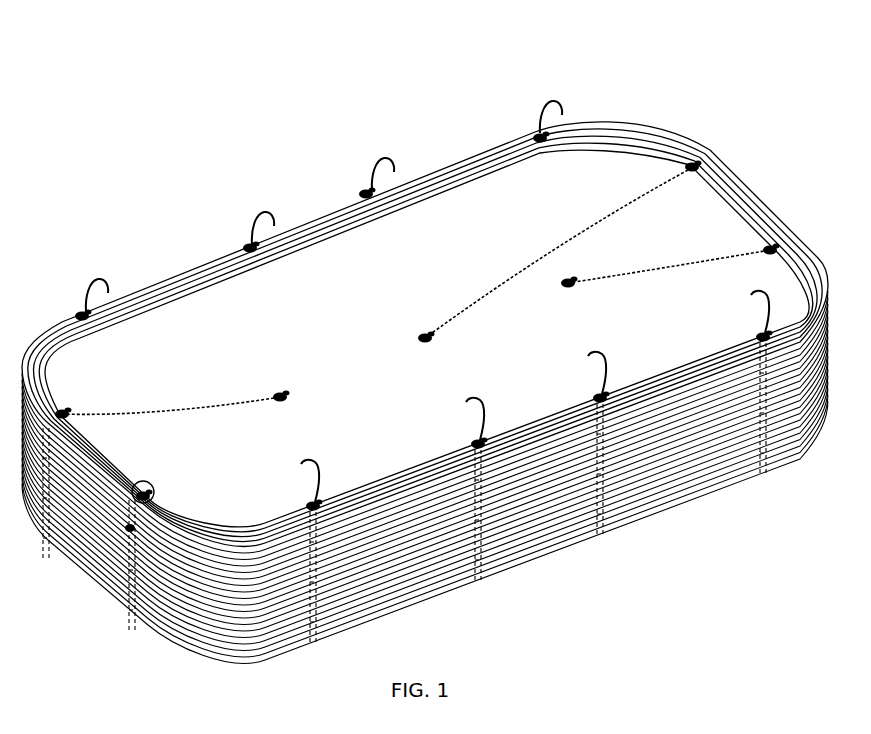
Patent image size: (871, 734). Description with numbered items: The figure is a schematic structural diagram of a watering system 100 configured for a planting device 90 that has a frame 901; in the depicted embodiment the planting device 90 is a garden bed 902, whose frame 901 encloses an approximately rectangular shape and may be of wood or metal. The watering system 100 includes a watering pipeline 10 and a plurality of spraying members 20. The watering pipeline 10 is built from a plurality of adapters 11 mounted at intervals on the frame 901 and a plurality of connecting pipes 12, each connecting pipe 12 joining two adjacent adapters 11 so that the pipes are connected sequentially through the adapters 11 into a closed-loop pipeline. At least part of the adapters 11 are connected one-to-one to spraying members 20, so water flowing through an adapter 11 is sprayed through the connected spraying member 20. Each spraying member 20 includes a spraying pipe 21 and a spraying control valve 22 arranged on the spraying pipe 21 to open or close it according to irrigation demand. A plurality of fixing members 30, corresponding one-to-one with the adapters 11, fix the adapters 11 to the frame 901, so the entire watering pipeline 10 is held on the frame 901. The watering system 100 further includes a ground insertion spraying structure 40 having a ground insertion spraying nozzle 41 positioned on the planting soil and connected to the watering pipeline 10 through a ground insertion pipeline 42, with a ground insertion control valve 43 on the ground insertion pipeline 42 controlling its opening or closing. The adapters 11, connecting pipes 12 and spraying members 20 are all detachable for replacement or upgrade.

The watering system 100 is at (470, 170).
The watering pipeline 10 is at (188, 282).
The adapter 11 is at (80, 314).
The connecting pipe 12 is at (140, 303).
The spraying member 20 is at (352, 108).
The spraying pipe 21 is at (378, 168).
The spraying control valve 22 is at (366, 191).
The fixing member 30 is at (247, 241).
The ground insertion spraying structure 40 is at (712, 82).
The ground insertion spraying nozzle 41 is at (568, 282).
The ground insertion pipeline 42 is at (623, 270).
The ground insertion control valve 43 is at (768, 250).
The planting device 90 is at (438, 578).
The frame 901 is at (568, 536).
The garden bed 902 is at (720, 466).